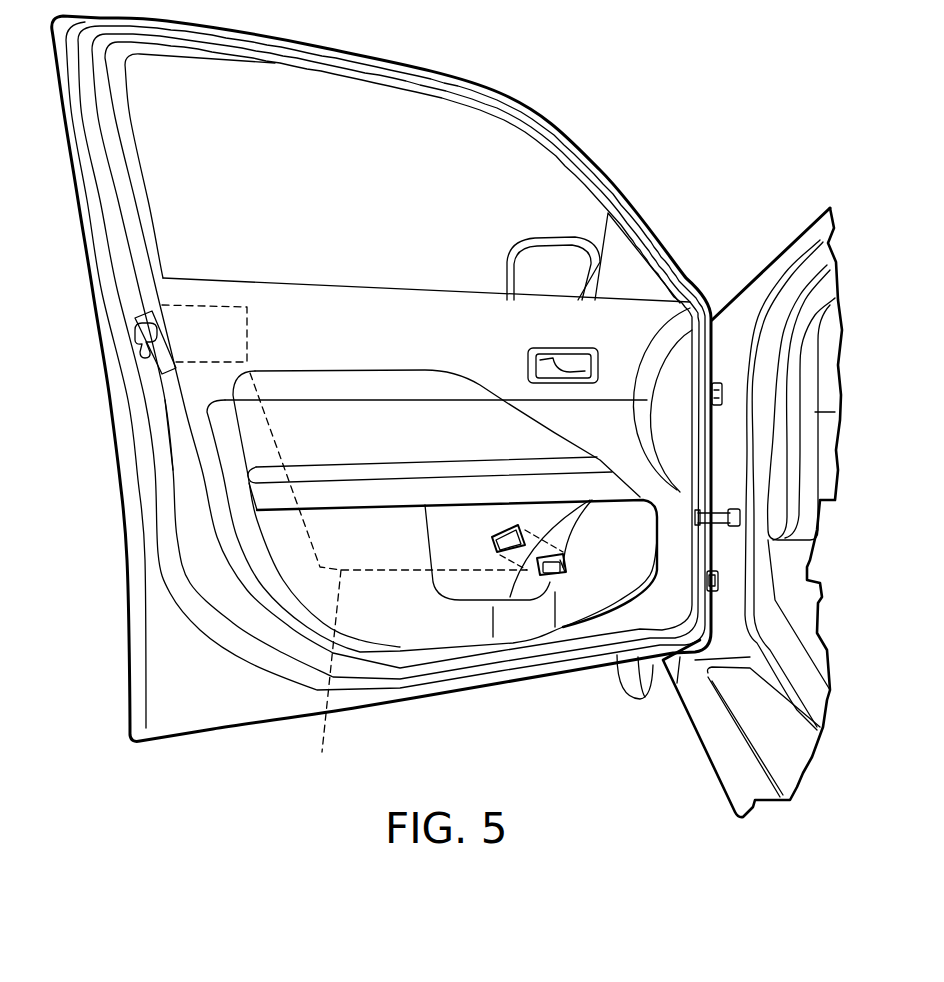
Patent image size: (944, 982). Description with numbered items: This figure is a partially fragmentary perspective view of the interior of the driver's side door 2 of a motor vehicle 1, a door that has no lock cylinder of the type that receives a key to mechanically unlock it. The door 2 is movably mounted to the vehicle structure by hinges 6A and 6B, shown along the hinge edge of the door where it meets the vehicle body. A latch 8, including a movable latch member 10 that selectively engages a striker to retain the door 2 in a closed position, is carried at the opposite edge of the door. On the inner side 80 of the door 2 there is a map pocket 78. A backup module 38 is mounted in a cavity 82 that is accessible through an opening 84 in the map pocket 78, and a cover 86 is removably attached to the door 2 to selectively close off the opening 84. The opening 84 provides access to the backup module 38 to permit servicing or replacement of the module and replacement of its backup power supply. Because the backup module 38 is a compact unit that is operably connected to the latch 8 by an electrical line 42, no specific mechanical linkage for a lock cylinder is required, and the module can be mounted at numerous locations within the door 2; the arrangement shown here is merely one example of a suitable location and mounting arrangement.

The motor vehicle 1 is at (770, 250).
The driver's side door 2 is at (118, 535).
The hinge 6A is at (722, 390).
The hinge 6B is at (717, 587).
The latch 8 is at (192, 305).
The movable latch member 10 is at (133, 333).
The backup module 38 is at (549, 577).
The electrical line 42 is at (406, 576).
The map pocket 78 is at (467, 588).
The inner side 80 is at (193, 387).
The cavity 82 is at (538, 574).
The opening 84 is at (563, 572).
The cover 86 is at (507, 537).